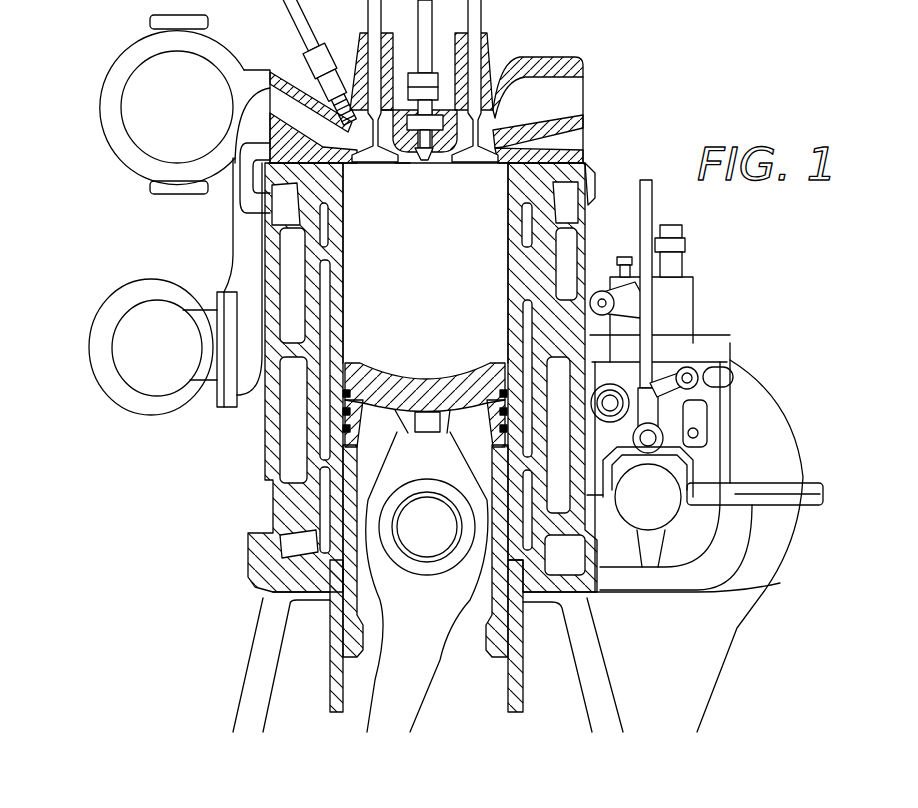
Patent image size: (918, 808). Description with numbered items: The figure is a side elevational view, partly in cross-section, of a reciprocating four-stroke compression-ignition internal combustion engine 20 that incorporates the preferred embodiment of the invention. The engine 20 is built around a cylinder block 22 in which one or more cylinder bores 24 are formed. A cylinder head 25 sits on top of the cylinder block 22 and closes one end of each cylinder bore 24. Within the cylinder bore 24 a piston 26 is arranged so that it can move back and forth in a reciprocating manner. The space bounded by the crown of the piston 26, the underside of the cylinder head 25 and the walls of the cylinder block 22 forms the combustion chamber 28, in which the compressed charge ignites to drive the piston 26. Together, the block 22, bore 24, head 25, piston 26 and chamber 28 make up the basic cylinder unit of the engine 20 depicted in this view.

The reciprocating 4-stroke compression-ignition internal combustion engine 20 is at (104, 215).
The cylinder block 22 is at (590, 213).
The cylinder bore 24 is at (507, 238).
The cylinder head 25 is at (402, 166).
The piston 26 is at (404, 357).
The combustion chamber 28 is at (413, 278).